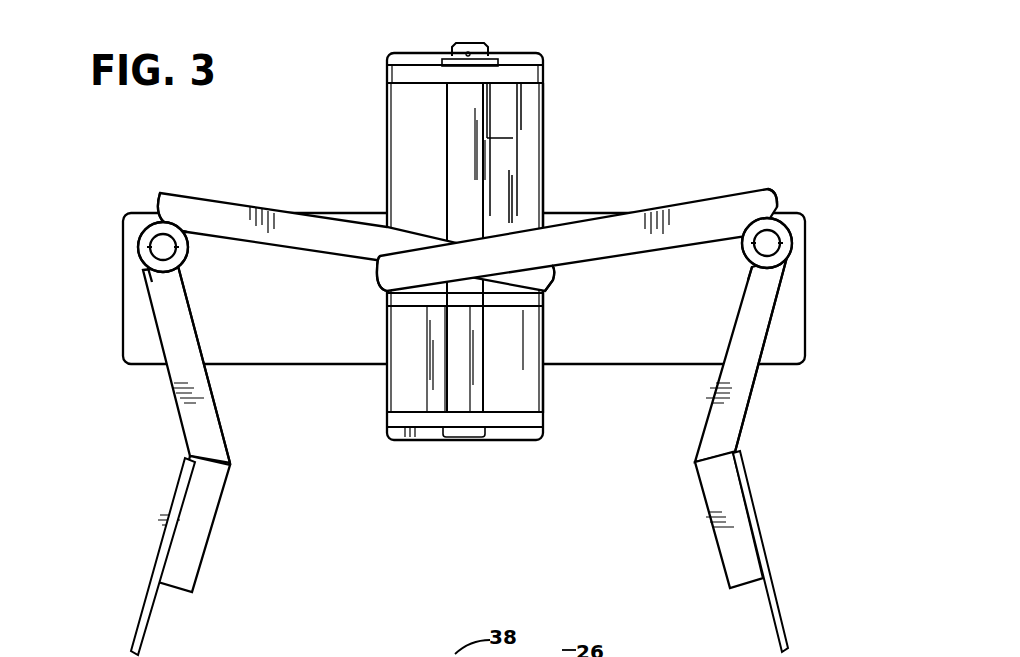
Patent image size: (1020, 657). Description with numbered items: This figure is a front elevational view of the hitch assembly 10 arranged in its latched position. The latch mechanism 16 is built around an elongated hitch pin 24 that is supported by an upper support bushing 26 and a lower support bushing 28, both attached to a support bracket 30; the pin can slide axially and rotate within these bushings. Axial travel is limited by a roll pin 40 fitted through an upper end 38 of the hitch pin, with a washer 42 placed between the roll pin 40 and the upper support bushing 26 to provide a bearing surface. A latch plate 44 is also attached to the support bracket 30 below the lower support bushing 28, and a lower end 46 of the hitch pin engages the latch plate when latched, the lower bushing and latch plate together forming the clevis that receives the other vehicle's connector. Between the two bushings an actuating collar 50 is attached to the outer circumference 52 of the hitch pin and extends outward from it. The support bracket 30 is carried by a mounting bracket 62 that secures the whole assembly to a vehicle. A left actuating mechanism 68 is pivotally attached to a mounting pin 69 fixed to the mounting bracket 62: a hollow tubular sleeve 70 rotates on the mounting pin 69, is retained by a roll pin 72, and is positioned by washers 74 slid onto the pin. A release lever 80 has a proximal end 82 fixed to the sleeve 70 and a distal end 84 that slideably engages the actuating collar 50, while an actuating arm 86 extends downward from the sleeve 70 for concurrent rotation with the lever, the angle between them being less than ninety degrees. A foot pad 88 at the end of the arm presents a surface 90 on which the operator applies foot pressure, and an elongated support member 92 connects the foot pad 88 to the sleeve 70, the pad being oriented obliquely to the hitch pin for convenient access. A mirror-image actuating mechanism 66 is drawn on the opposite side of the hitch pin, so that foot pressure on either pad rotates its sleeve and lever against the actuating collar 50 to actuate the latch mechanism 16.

The hitch assembly 10 is at (735, 92).
The latch mechanism 16 is at (384, 112).
The hitch pin 24 is at (518, 138).
The upper support bushing 26 is at (545, 62).
The lower support bushing 28 is at (523, 308).
The support bracket 30 is at (545, 164).
The upper end 38 is at (470, 45).
The roll pin 40 is at (466, 54).
The washer 42 is at (500, 60).
The latch plate 44 is at (403, 428).
The lower end 46 is at (467, 437).
The actuating collar 50 is at (344, 170).
The outer circumference 52 is at (447, 146).
The mounting bracket 62 is at (122, 338).
The right leg assembly 66 is at (760, 420).
The left actuating mechanism 68 is at (152, 444).
The mounting pin 69 is at (167, 266).
The tubular sleeve 70 is at (140, 240).
The roll pin 72 is at (148, 249).
The washers 74 is at (150, 230).
The release lever 80 is at (252, 199).
The proximal end 82 is at (164, 190).
The distal end 84 is at (380, 283).
The actuating arm 86 is at (173, 391).
The foot pad 88 is at (163, 533).
The surface 90 is at (513, 226).
The elongated support member 92 is at (224, 420).